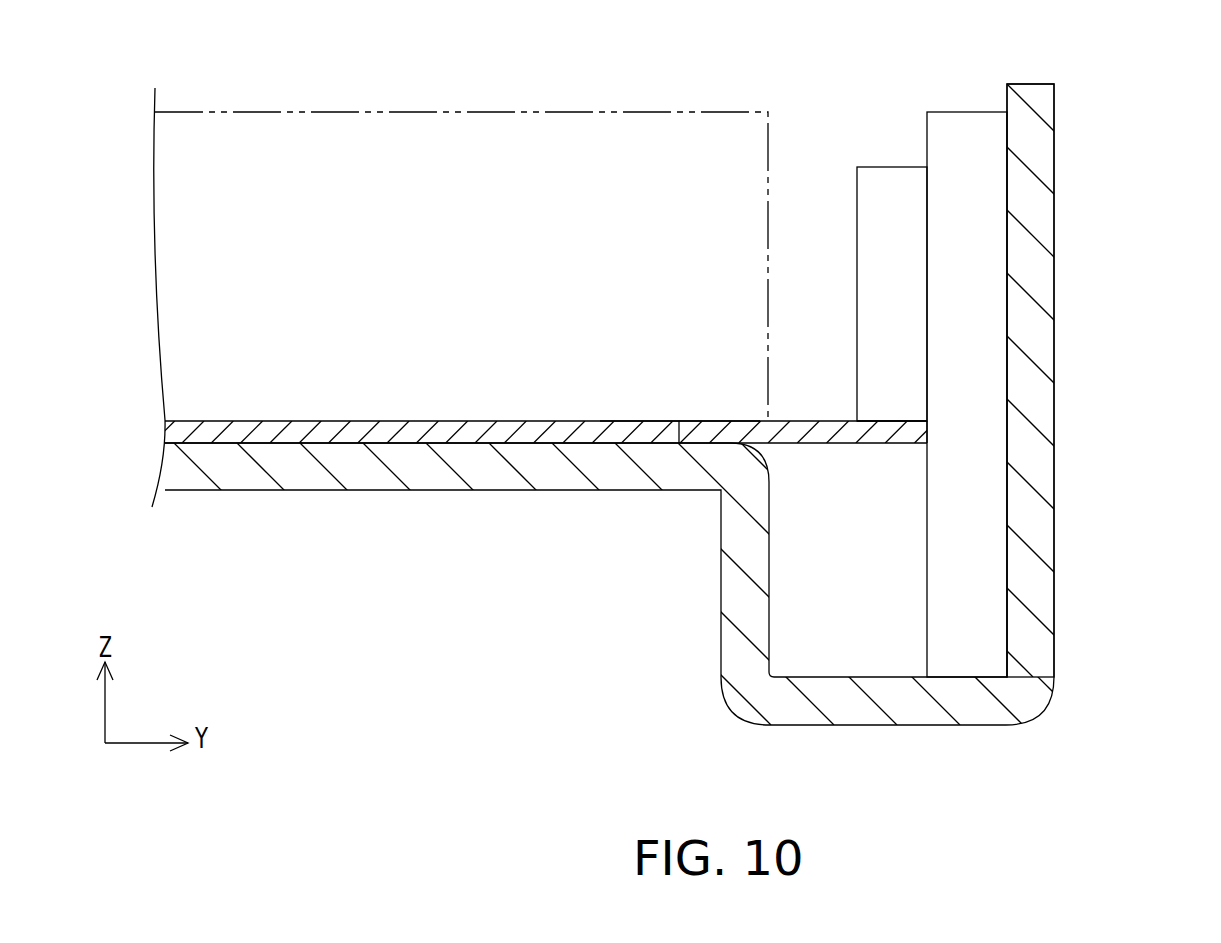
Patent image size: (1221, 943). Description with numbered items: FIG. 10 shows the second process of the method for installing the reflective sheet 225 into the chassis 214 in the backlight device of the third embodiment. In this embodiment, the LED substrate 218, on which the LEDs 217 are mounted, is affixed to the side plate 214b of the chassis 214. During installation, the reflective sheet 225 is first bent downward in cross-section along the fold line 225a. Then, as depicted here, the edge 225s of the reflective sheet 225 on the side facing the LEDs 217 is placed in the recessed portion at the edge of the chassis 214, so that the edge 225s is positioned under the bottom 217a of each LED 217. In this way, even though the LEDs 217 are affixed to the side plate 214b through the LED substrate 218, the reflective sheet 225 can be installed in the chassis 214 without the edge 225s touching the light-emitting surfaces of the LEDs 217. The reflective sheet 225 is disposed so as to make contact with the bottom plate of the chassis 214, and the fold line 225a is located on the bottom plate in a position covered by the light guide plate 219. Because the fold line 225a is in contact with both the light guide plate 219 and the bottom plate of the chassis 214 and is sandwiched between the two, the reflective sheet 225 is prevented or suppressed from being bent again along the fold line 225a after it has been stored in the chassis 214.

The chassis 214 is at (486, 472).
The side plate 214b is at (1037, 400).
The LED 217 is at (891, 167).
The bottom of LED 217a is at (879, 422).
The LED substrate 218 is at (972, 112).
The light guide plate 219 is at (330, 195).
The reflective sheet 225 is at (288, 443).
The fold line 225a is at (680, 428).
The edge of reflective sheet 225s is at (927, 432).